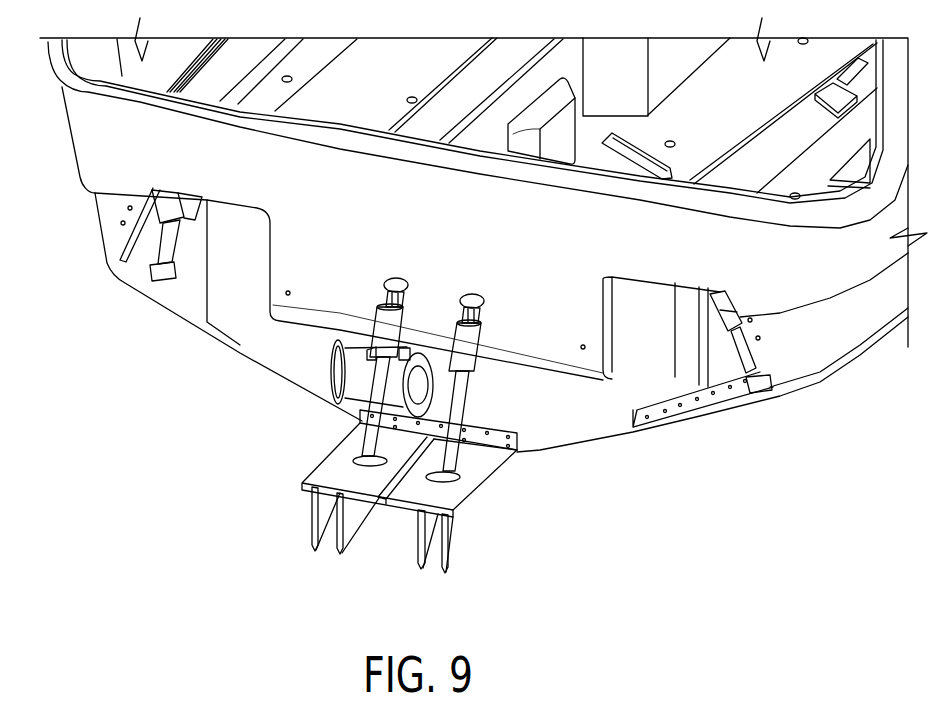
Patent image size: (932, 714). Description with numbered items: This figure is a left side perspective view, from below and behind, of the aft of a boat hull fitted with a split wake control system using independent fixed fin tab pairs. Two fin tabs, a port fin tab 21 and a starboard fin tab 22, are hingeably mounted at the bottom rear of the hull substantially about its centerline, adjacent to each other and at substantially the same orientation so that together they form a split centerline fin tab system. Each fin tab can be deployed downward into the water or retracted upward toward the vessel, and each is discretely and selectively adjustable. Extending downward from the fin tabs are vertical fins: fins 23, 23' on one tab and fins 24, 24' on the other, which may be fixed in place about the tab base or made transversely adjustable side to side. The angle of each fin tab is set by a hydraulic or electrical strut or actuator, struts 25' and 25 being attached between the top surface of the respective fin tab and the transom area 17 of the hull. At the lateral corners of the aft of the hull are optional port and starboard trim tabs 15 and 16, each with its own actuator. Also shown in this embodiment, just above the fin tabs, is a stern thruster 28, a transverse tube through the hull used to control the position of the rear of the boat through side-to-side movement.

The port trim tab 15 is at (175, 303).
The starboard trim tab 16 is at (695, 410).
The transom area 17 is at (468, 250).
The port fin tab 21 is at (337, 475).
The starboard fin tab 22 is at (478, 467).
The fixed fin 23 is at (300, 517).
The fixed fin 23' is at (358, 539).
The fixed fin 24 is at (407, 566).
The fixed fin 24' is at (480, 546).
The strut or actuator 25 is at (478, 388).
The strut or actuator 25' is at (368, 372).
The stern thruster 28 is at (357, 381).